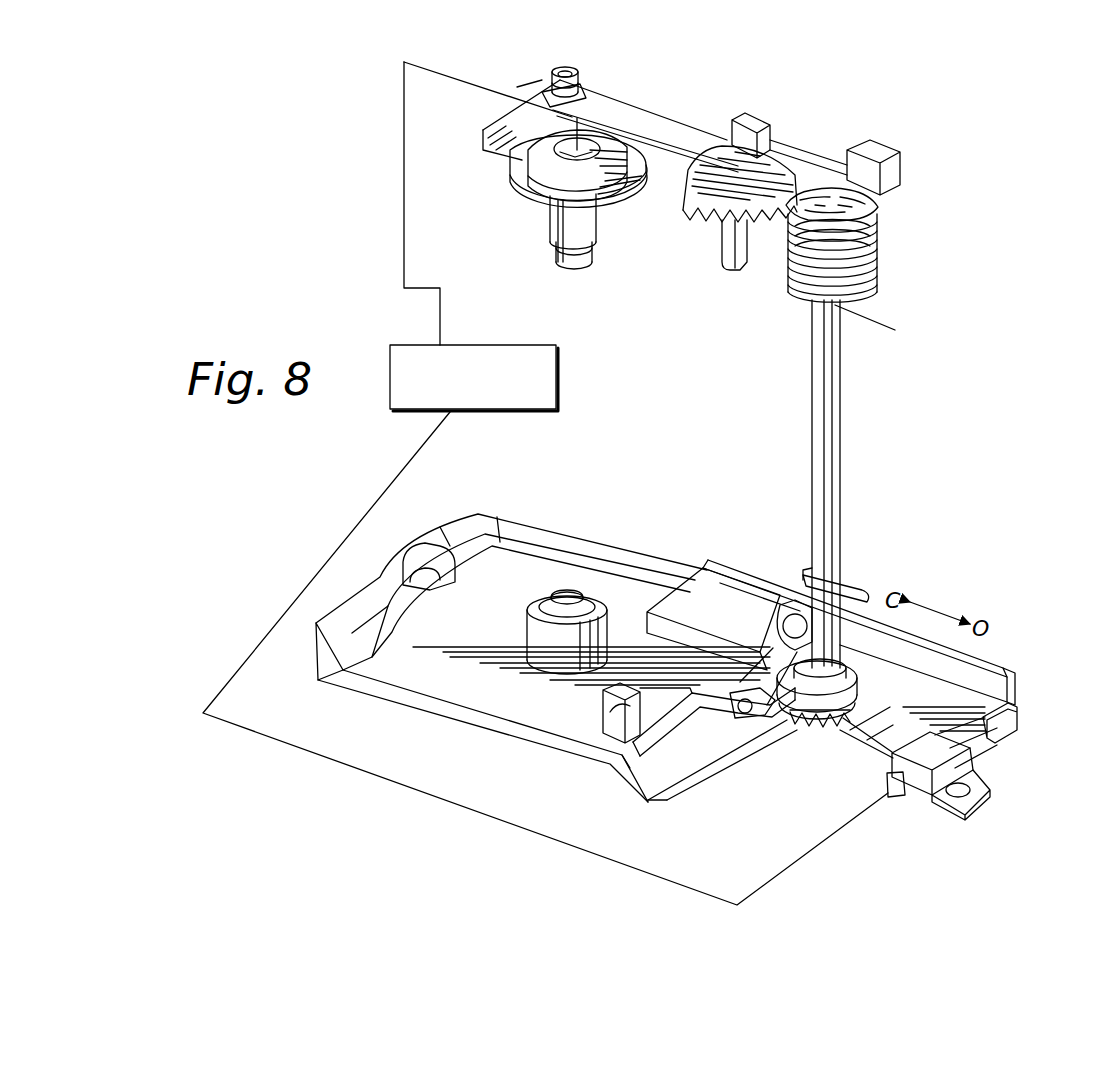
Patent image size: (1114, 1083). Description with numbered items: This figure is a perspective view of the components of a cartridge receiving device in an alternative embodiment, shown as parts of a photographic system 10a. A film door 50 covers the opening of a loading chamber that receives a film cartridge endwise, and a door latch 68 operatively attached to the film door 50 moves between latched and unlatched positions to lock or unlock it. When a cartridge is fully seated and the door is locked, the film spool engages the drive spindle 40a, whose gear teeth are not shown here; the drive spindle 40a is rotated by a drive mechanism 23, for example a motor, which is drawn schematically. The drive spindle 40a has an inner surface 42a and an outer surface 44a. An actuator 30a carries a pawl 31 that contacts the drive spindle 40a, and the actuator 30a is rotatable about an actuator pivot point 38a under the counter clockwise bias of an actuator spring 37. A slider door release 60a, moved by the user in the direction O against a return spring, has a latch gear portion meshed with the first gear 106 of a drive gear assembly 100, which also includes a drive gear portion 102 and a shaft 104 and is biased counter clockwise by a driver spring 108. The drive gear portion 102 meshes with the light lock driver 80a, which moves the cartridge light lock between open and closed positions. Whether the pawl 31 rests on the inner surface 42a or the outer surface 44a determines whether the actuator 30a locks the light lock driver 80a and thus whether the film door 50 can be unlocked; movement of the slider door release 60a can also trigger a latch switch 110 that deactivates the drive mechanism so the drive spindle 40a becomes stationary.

The photographic system 10a is at (950, 378).
The drive mechanism 23 is at (556, 372).
The actuator 30a is at (640, 112).
The pawl 31 is at (483, 139).
The actuator spring 37 is at (545, 72).
The actuator pivot point 38a is at (566, 67).
The drive spindle 40a is at (580, 256).
The inner surface 42a is at (533, 187).
The outer surface 44a is at (624, 207).
The film door 50 is at (483, 723).
The slider door release 60a is at (1019, 672).
The door latch 68 is at (687, 722).
The light lock driver 80a is at (787, 172).
The drive gear assembly 100 is at (844, 501).
The drive gear portion 102 is at (880, 217).
The shaft 104 is at (812, 422).
The first gear 106 is at (815, 738).
The driver spring 108 is at (868, 287).
The latch switch 110 is at (1003, 780).